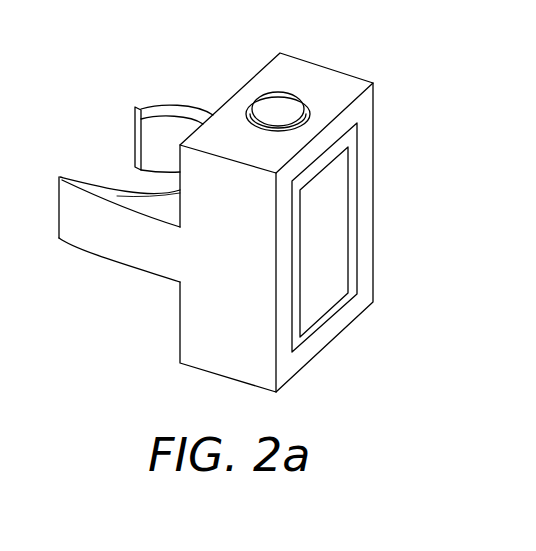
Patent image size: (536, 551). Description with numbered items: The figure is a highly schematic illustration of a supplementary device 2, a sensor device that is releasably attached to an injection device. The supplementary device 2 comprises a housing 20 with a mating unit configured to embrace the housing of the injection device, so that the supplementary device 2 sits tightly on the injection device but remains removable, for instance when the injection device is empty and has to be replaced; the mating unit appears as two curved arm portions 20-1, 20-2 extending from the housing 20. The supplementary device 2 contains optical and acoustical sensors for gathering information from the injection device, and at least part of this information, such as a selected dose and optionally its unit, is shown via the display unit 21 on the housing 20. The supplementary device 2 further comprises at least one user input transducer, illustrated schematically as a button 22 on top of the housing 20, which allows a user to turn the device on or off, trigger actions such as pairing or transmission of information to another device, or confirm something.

The supplementary device 2 is at (386, 50).
The housing 20 is at (226, 363).
The first arm 20-1 is at (73, 175).
The second arm 20-2 is at (147, 108).
The display unit 21 is at (343, 210).
The button 22 is at (278, 98).